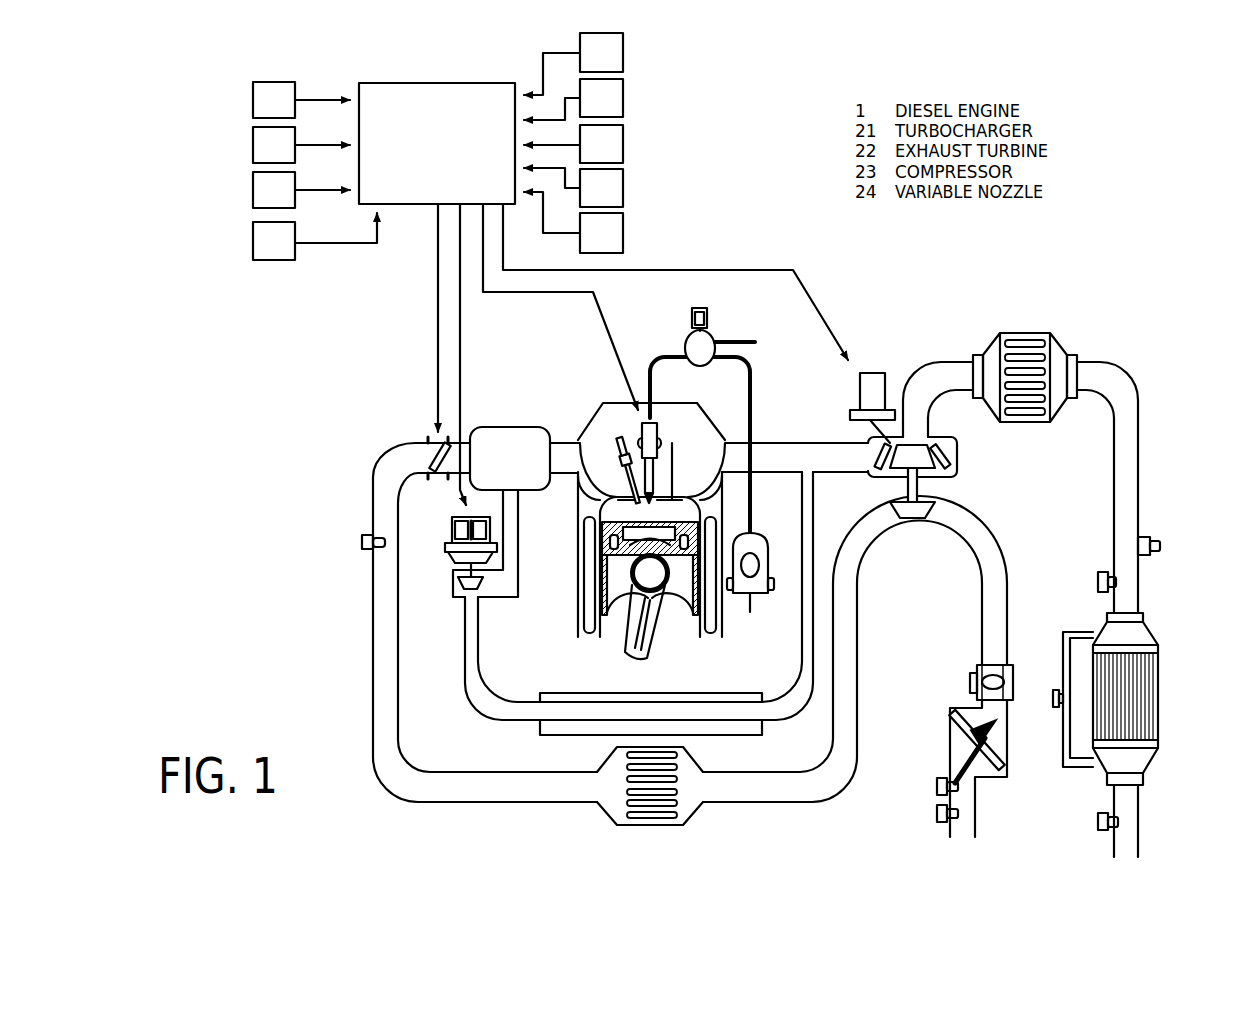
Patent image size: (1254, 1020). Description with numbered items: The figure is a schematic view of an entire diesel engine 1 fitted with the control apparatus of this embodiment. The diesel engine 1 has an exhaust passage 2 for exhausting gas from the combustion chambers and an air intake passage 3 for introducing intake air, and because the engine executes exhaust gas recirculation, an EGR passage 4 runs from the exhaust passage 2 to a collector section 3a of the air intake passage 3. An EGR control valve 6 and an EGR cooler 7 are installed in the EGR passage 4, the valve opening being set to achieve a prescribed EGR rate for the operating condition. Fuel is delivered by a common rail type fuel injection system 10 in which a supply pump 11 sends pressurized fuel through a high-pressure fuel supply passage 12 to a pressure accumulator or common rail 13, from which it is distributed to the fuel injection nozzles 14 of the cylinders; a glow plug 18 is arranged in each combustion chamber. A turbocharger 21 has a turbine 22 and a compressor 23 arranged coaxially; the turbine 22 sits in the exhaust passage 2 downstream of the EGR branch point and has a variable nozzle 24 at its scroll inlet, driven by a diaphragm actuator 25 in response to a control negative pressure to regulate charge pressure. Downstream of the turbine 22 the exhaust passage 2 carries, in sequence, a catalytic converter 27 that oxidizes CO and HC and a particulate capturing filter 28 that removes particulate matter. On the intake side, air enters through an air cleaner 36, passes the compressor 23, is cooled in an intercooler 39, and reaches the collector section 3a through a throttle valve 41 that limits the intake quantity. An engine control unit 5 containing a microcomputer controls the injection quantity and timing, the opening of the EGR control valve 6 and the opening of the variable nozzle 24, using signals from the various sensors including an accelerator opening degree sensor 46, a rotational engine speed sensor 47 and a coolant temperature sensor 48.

The diesel engine 1 is at (560, 600).
The exhaust passage 2 is at (780, 445).
The air intake passage 3 is at (373, 660).
The collector section 3a is at (508, 428).
The EGR passage 4 is at (466, 660).
The engine control unit 5 is at (412, 83).
The EGR control valve 6 is at (445, 531).
The EGR cooler 7 is at (727, 692).
The common rail type fuel injection system 10 is at (709, 442).
The supply pump 11 is at (763, 533).
The high-pressure fuel supply passage 12 is at (752, 380).
The pressure accumulator (common rail) 13 is at (706, 340).
The fuel injection nozzle 14 is at (661, 445).
The glow plug 18 is at (620, 445).
The turbocharger 21 is at (949, 483).
The turbine 22 is at (915, 445).
The compressor 23 is at (912, 518).
The variable nozzle 24 is at (947, 455).
The diaphragm actuator 25 is at (872, 372).
The catalytic converter 27 is at (1028, 335).
The particulate capturing filter (DPF) 28 is at (1158, 693).
The air cleaner 36 is at (990, 770).
The intercooler 39 is at (680, 803).
The throttle valve 41 is at (432, 455).
The accelerator opening degree sensor 46 is at (301, 100).
The rotational engine speed sensor 47 is at (301, 145).
The coolant temperature sensor 48 is at (301, 190).